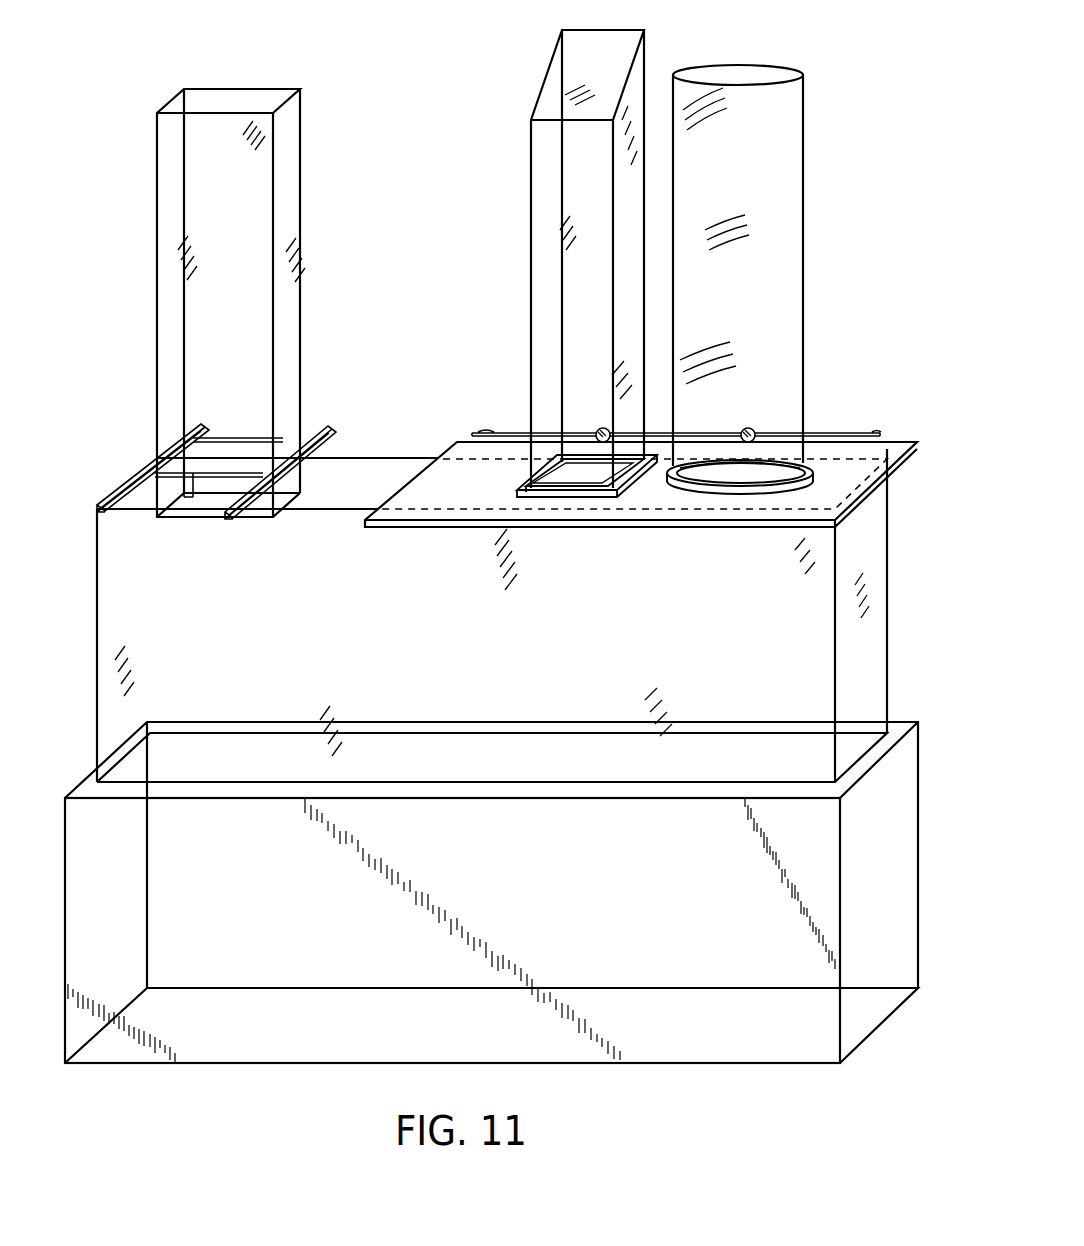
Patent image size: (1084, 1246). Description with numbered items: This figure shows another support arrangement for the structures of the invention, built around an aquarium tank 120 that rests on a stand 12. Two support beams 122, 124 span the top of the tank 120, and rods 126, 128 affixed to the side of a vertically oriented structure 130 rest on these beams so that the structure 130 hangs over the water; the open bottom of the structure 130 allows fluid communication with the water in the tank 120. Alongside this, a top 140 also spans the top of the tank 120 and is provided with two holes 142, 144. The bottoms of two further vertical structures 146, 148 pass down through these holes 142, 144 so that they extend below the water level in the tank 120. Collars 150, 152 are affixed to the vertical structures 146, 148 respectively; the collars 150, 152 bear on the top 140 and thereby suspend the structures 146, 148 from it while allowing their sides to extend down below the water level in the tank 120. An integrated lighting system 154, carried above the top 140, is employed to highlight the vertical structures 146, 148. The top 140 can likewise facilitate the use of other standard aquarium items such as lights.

The stand 12 is at (482, 910).
The tank 120 is at (490, 657).
The support beam 122 is at (148, 464).
The support beam 124 is at (327, 430).
The rod 126 is at (201, 478).
The rod 128 is at (228, 437).
The vertically oriented structure 130 is at (243, 208).
The top 140 is at (904, 441).
The hole 142 is at (552, 462).
The hole 144 is at (710, 464).
The vertical structure 146 is at (610, 82).
The vertical structure 148 is at (753, 193).
The collar 150 is at (597, 493).
The collar 152 is at (741, 489).
The integrated lighting system 154 is at (586, 428).